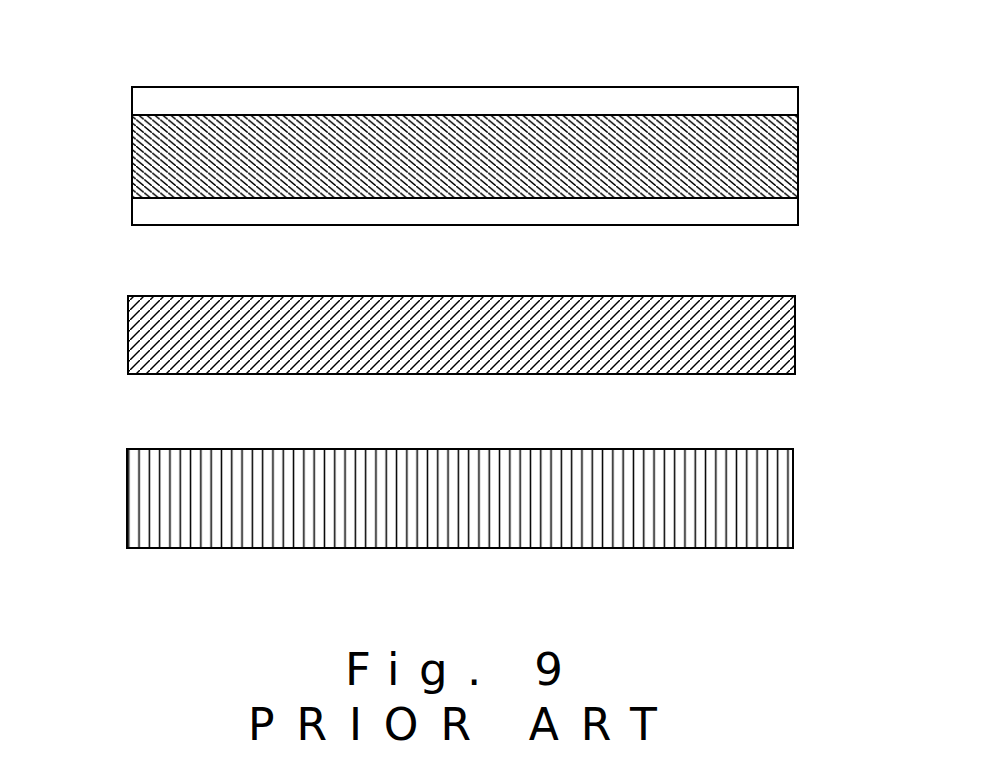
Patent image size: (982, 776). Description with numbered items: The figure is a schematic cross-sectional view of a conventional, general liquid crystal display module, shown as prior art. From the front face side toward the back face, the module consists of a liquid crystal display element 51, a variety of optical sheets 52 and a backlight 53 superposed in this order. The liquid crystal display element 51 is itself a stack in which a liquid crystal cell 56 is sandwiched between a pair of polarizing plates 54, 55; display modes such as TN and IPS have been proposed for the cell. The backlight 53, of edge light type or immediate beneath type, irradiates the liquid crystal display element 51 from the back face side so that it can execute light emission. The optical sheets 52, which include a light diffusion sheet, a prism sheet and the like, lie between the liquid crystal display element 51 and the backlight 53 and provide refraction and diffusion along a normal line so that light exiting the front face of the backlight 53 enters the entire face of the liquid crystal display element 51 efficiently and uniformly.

The liquid crystal display element 51 is at (466, 126).
The optical sheets 52 is at (115, 310).
The backlight 53 is at (115, 455).
The polarizing plate 54 is at (799, 103).
The polarizing plate 55 is at (799, 212).
The liquid crystal cell 56 is at (799, 155).